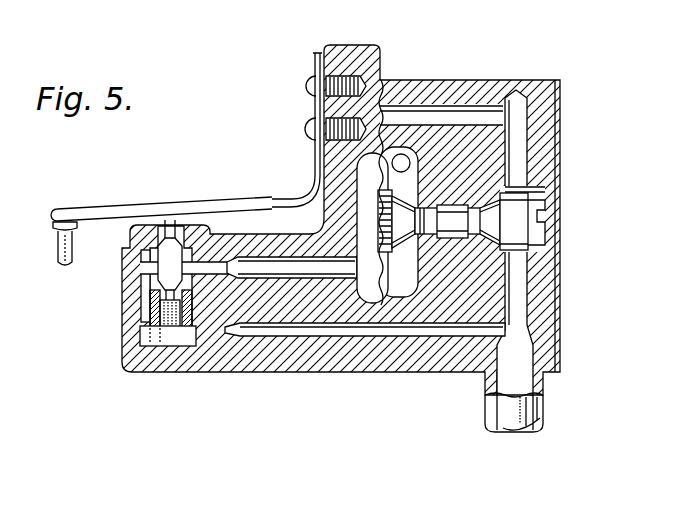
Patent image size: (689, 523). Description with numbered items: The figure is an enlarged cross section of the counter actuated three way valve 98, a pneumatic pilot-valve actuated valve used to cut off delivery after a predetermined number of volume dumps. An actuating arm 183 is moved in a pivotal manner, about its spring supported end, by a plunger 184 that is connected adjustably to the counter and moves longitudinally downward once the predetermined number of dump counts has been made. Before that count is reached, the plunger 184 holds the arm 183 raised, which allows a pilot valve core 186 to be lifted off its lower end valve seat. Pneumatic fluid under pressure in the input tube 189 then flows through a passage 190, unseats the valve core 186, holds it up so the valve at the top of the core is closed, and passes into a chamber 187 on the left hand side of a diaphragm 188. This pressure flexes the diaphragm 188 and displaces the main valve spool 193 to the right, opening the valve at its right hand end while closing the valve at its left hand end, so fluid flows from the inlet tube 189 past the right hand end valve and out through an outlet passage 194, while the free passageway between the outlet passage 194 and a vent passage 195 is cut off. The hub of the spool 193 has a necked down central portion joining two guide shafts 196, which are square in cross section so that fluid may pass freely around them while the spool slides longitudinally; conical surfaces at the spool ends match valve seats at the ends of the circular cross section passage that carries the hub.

The counter actuated three way valve 98 is at (441, 53).
The actuating arm 183 is at (119, 208).
The plunger 184 is at (62, 252).
The pilot valve core 186 is at (170, 258).
The chamber 187 is at (381, 185).
The diaphragm 188 is at (386, 262).
The input tube 189 is at (541, 412).
The passage 190 is at (344, 332).
The main valve spool 193 is at (531, 213).
The outlet passage 194 is at (446, 212).
The vent passage 195 is at (412, 158).
The guide shafts 196 is at (428, 243).